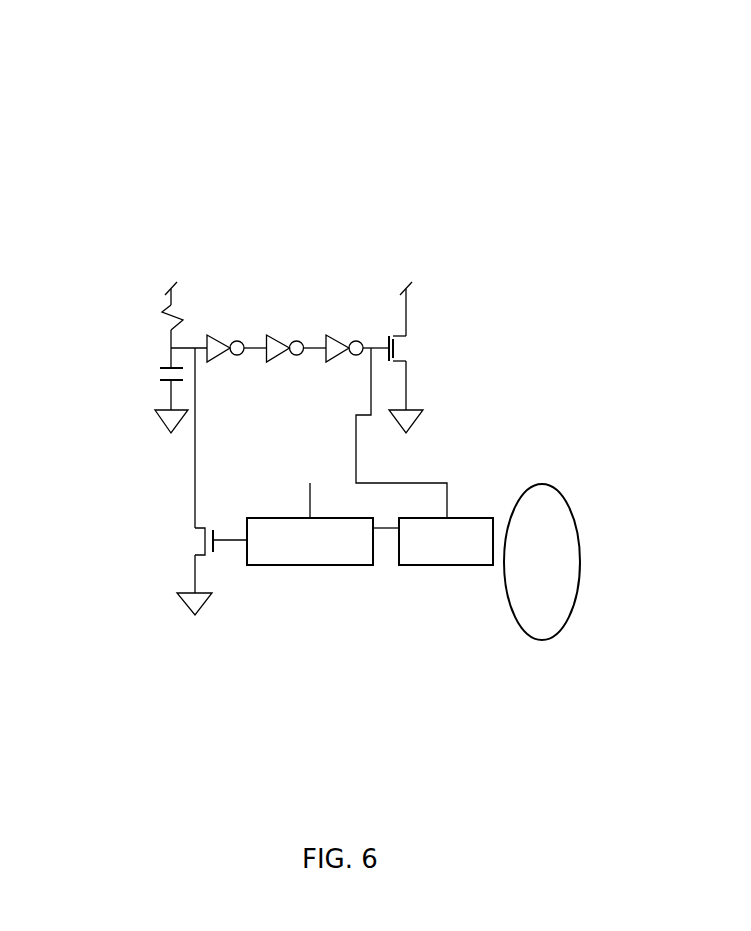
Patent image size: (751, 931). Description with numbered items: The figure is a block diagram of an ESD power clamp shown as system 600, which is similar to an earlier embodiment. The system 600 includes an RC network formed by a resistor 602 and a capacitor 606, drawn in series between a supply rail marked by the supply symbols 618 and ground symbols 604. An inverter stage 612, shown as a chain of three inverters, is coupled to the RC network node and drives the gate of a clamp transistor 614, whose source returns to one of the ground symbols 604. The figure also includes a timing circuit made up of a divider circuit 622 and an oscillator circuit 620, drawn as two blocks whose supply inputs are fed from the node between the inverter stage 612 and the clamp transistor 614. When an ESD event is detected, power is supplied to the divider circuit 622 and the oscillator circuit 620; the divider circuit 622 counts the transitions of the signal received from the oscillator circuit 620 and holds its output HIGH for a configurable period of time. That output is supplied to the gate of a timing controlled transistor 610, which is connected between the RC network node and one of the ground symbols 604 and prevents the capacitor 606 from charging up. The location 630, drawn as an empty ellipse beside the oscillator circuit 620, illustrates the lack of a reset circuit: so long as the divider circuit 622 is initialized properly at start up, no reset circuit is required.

The system 600 is at (575, 175).
The resistor 602 is at (147, 313).
The ground 604 is at (147, 422).
The capacitor 606 is at (147, 377).
The timing controlled transistor 610 is at (182, 548).
The inverter stage 612 is at (320, 318).
The clamp transistor 614 is at (419, 348).
The supply voltage 618 is at (287, 266).
The oscillator circuit 620 is at (452, 577).
The divider circuit 622 is at (318, 570).
The location 630 is at (585, 557).